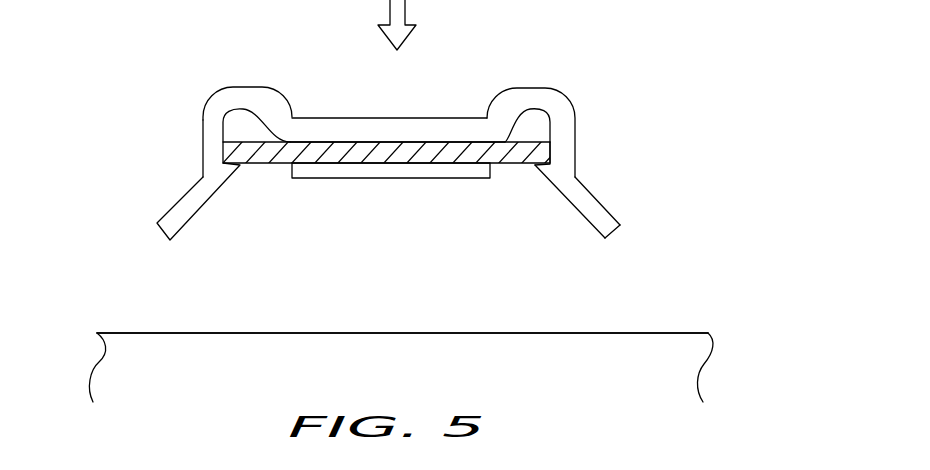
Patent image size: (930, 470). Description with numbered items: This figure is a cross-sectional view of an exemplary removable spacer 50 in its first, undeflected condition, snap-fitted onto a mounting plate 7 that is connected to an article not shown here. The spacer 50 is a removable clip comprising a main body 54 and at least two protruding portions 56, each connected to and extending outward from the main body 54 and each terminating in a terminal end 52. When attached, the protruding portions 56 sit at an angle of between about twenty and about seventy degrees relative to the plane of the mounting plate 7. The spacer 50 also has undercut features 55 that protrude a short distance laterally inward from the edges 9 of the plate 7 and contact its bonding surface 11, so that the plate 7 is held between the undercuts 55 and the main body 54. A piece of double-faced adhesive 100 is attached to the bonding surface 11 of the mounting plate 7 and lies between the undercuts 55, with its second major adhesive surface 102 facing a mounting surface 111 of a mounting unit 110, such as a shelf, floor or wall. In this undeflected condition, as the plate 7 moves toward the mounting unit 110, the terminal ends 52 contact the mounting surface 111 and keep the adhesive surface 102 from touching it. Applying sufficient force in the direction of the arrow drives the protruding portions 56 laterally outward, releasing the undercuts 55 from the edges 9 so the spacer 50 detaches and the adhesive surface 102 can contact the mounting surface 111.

The mounting plate 7 is at (326, 142).
The edges of plate 9 is at (240, 117).
The bonding surface 11 is at (263, 165).
The removable spacer 50 is at (515, 98).
The terminal end 52 is at (171, 240).
The main body 54 is at (432, 128).
The undercut feature 55 is at (540, 170).
The protruding portion 56 is at (587, 198).
The double-faced adhesive 100 is at (345, 165).
The second major adhesive surface 102 is at (430, 179).
The mounting unit 110 is at (108, 368).
The mounting surface 111 is at (229, 332).